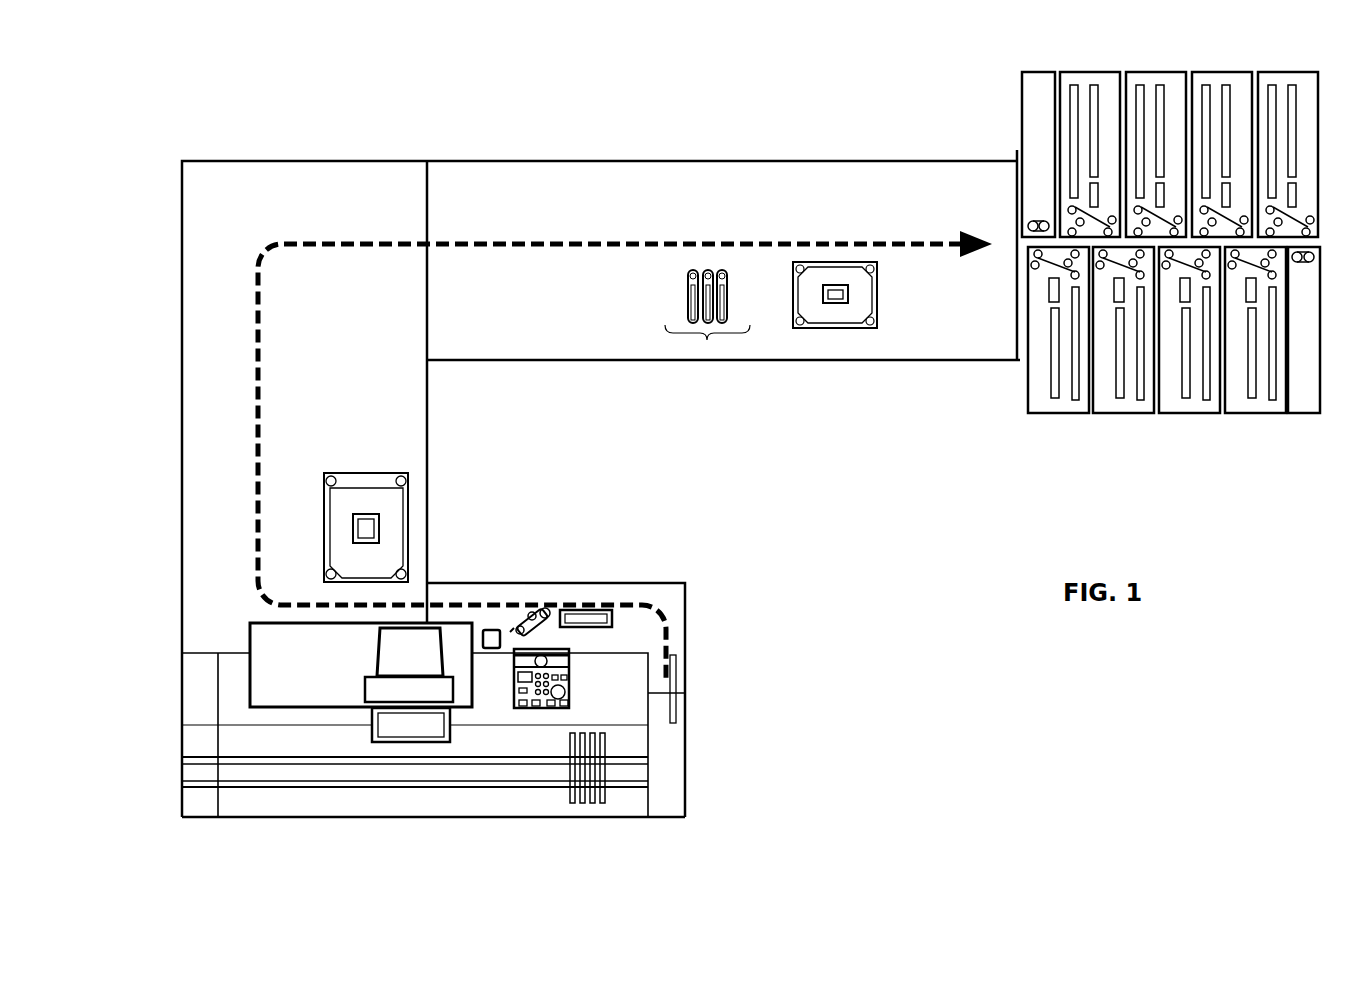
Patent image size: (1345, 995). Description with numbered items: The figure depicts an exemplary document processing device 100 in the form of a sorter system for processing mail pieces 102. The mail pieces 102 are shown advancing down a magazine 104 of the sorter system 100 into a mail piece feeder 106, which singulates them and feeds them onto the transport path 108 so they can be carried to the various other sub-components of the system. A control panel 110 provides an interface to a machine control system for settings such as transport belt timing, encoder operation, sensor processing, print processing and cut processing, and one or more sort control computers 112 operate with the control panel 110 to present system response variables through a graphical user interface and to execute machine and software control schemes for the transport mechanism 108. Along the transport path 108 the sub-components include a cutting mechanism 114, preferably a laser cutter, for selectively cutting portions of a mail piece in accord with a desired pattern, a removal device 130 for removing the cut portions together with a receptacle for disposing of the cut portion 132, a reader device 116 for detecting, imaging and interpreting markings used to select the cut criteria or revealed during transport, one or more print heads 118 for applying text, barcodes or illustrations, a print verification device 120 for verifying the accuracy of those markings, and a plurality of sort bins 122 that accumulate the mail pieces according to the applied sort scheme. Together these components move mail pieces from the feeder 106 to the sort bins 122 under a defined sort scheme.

The document processing device 100 is at (580, 104).
The mail pieces 102 is at (549, 803).
The magazine 104 is at (226, 773).
The mail piece feeder 106 is at (671, 757).
The transport path 108 is at (334, 240).
The control panel 110 is at (576, 669).
The sort control computer 112 is at (362, 648).
The cutting mechanism 114 is at (590, 633).
The reader device 116 is at (367, 468).
The print heads 118 is at (707, 346).
The print verification device 120 is at (840, 334).
The sort bins 122 is at (1024, 61).
The removal device 130 is at (512, 634).
The cut portion receptacle 132 is at (494, 625).